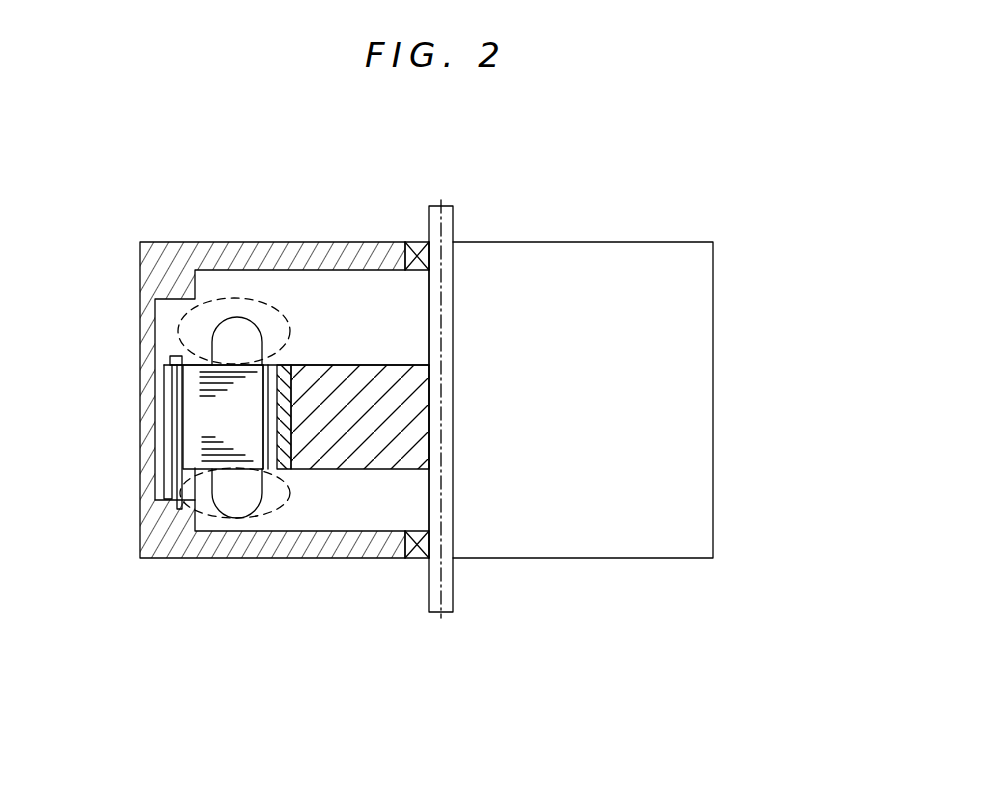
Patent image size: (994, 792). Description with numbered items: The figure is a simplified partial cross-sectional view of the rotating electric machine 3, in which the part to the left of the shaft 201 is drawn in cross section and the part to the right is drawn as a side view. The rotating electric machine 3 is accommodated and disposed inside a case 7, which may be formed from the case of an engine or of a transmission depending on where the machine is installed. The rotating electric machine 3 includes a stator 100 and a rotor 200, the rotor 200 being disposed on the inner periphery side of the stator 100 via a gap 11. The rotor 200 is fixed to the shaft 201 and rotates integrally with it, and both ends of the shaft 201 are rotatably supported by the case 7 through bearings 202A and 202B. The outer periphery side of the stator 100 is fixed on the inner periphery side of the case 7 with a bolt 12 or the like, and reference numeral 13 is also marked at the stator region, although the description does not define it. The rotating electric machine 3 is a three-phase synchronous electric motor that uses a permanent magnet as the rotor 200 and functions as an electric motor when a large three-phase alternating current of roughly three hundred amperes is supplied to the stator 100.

The rotating electric machine 3 is at (763, 261).
The case 7 is at (498, 260).
The gap 11 is at (233, 484).
The bolt 12 is at (172, 357).
The lead wire 13 is at (205, 310).
The stator 100 is at (200, 508).
The rotor 200 is at (322, 366).
The shaft 201 is at (453, 322).
The bearing 202A is at (414, 246).
The bearing 202B is at (410, 560).